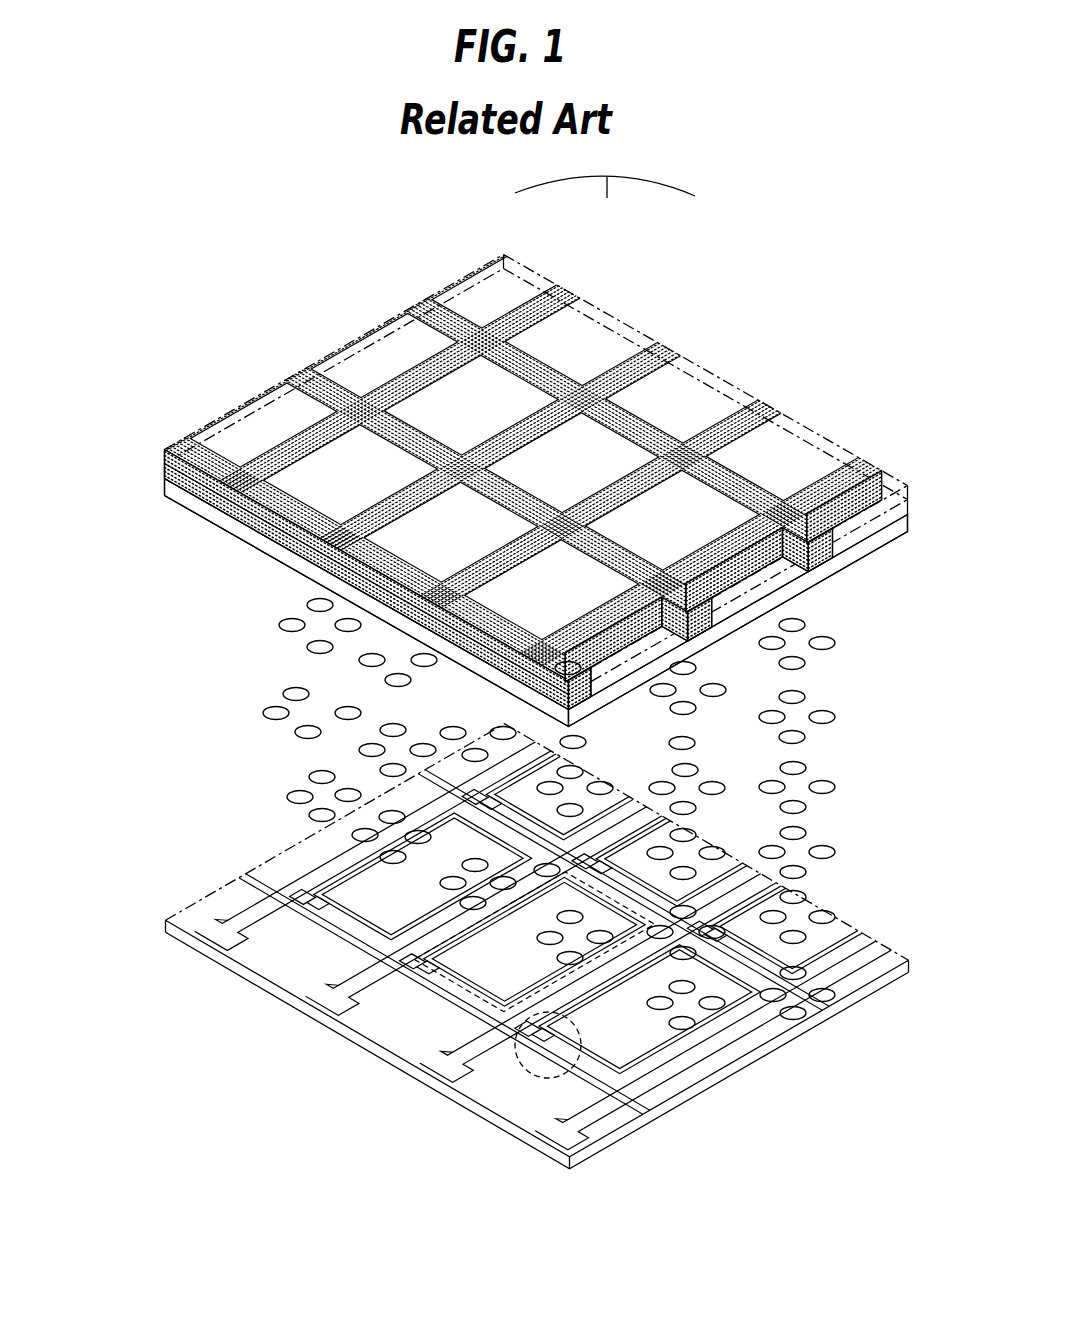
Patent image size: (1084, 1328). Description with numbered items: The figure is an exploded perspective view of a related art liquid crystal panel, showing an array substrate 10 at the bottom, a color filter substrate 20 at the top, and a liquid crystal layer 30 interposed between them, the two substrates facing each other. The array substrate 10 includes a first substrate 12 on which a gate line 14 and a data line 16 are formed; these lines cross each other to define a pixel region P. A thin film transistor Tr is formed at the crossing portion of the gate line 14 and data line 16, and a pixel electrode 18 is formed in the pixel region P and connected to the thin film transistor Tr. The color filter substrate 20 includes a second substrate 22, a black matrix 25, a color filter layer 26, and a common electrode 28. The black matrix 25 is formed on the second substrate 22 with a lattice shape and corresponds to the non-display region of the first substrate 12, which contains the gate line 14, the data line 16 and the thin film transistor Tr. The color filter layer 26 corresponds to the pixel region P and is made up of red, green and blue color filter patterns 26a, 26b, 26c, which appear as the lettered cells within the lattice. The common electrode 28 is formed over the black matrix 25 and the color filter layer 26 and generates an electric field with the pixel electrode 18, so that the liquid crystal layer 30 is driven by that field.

The array substrate 10 is at (248, 832).
The first substrate 12 is at (558, 1160).
The gate line 14 is at (534, 942).
The data line 16 is at (548, 944).
The pixel electrode 18 is at (576, 915).
The color filter substrate 20 is at (276, 308).
The second substrate 22 is at (164, 452).
The black matrix 25 is at (752, 418).
The color filter layer 26 is at (524, 447).
The red color filter pattern 26a is at (523, 266).
The green color filter pattern 26b is at (603, 320).
The blue color filter pattern 26c is at (695, 386).
The common electrode 28 is at (164, 489).
The liquid crystal layer 30 is at (824, 784).
The pixel region P is at (534, 942).
The thin film transistor Tr is at (522, 1070).